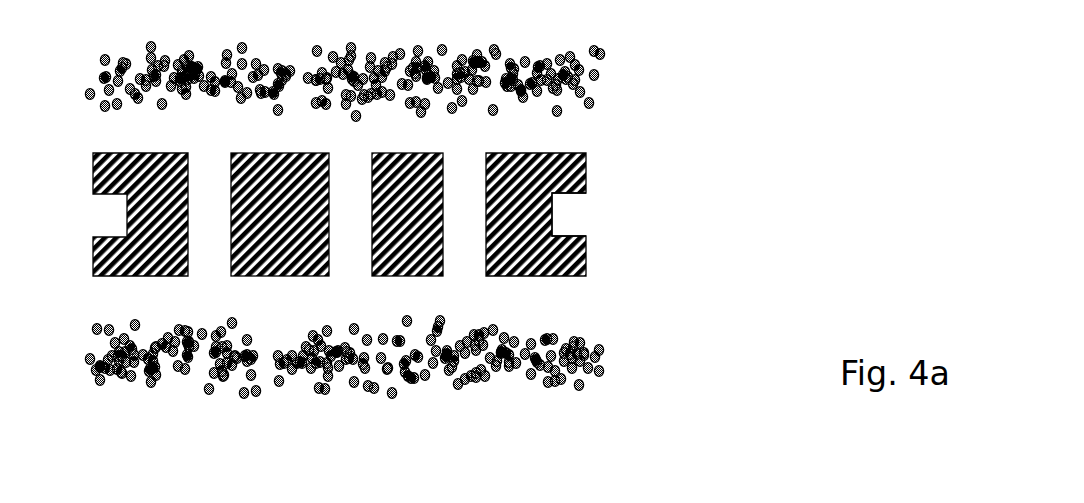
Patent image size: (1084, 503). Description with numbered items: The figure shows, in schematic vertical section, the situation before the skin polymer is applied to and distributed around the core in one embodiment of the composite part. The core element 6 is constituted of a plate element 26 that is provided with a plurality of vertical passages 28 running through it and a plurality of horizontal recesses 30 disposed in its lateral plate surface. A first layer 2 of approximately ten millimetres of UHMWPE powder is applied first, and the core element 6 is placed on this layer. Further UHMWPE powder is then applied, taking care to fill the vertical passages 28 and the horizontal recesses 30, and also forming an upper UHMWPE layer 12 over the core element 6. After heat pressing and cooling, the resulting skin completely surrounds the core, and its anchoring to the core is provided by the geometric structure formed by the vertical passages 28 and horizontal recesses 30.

The upper UHMWPE layer 12 is at (563, 62).
The plate element 26 is at (586, 173).
The horizontal recesses 30 is at (552, 213).
The vertical passages 28 is at (457, 255).
The core element 6 is at (740, 208).
The first layer 2 is at (553, 368).